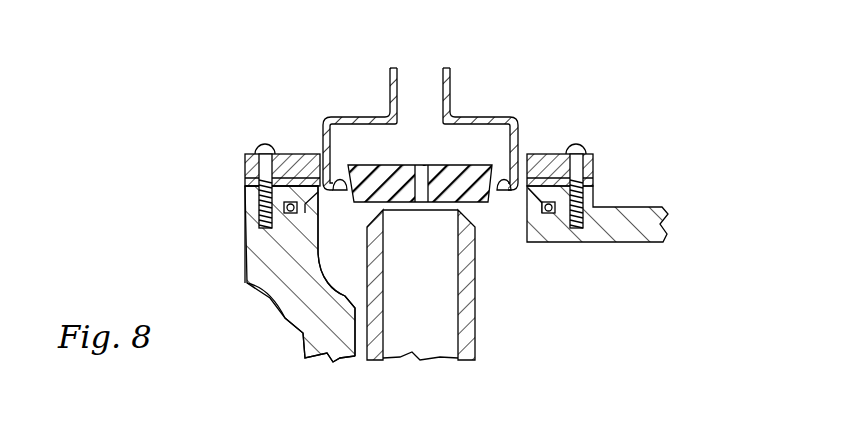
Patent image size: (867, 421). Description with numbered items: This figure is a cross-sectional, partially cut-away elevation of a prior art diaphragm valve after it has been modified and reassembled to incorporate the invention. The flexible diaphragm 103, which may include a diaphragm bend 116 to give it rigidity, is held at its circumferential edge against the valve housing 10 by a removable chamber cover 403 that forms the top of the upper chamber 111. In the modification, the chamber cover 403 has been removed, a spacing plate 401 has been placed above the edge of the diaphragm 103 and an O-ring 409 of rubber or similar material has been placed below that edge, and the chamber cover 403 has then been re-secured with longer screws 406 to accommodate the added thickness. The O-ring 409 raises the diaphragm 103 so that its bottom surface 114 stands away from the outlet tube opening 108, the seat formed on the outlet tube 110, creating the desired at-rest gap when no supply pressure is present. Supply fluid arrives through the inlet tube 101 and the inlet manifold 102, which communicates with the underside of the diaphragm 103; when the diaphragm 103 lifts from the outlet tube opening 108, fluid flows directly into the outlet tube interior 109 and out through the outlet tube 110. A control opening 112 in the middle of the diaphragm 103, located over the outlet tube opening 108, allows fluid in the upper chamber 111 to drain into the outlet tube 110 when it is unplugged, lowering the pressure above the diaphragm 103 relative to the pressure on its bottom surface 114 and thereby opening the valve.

The valve housing 10 is at (300, 331).
The inlet tube 101 is at (603, 329).
The inlet manifold 102 is at (287, 293).
The diaphragm 103 is at (490, 172).
The outlet tube opening 108 is at (467, 212).
The outlet tube interior 109 is at (402, 297).
The outlet tube 110 is at (480, 303).
The upper chamber 111 is at (492, 130).
The control opening 112 is at (420, 166).
The diaphragm bottom surface 114 is at (356, 203).
The diaphragm bend 116 is at (509, 191).
The spacing plate 401 is at (594, 182).
The chamber cover 403 is at (470, 116).
The screws 406 is at (582, 148).
The O-ring 409 is at (257, 198).